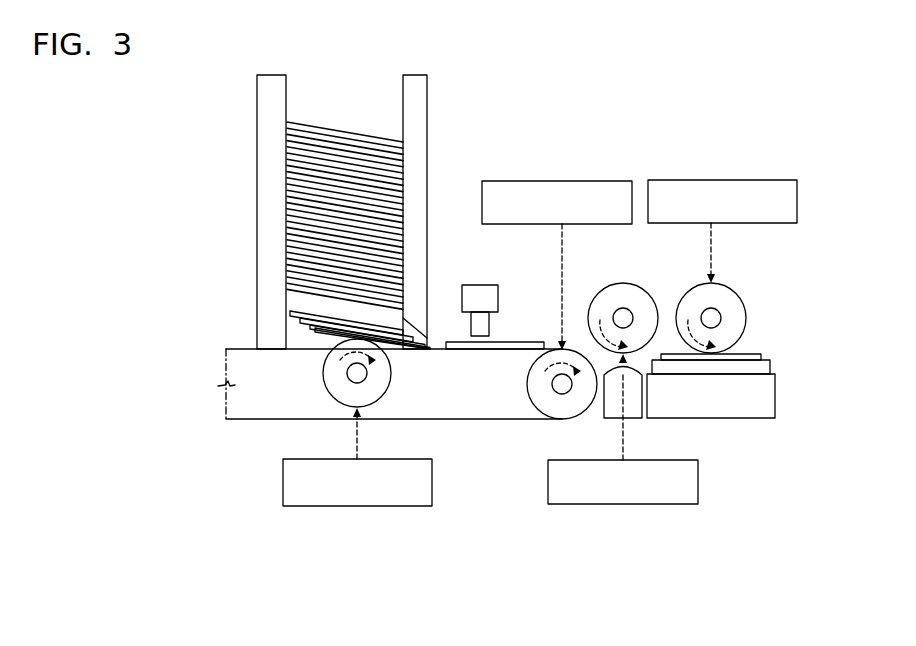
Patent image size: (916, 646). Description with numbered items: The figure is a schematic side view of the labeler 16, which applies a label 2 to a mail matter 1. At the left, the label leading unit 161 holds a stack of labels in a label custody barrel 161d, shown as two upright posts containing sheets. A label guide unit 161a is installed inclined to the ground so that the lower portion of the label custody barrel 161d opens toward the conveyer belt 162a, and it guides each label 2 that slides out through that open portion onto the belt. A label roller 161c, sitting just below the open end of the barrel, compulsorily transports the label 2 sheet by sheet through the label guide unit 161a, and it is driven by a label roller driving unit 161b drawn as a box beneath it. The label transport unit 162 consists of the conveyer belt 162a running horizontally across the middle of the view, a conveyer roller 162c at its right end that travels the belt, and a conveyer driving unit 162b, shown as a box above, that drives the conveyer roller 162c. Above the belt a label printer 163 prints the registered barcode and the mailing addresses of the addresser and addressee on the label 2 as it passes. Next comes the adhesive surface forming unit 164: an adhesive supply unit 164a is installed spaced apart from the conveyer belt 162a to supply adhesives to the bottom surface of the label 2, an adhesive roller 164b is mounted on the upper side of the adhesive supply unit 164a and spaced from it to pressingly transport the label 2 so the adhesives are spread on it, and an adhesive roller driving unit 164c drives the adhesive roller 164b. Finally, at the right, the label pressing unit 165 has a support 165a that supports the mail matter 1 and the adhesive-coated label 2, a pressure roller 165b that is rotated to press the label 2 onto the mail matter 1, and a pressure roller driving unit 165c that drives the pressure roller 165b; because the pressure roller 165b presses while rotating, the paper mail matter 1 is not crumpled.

The labeler 16 is at (893, 98).
The mail matter 1 is at (767, 368).
The label 2 is at (540, 342).
The label leading unit 161 is at (186, 438).
The label guide unit 161a is at (318, 334).
The label roller driving unit 161b is at (330, 506).
The label roller 161c is at (342, 390).
The label custody barrel 161d is at (265, 101).
The label transport unit 162 is at (560, 580).
The conveyer belt 162a is at (437, 350).
The conveyer driving unit 162b is at (525, 224).
The conveyer roller 162c is at (538, 392).
The label printer 163 is at (480, 285).
The adhesive surface forming unit 164 is at (784, 425).
The adhesive supply unit 164a is at (627, 412).
The adhesive roller 164b is at (635, 348).
The adhesive roller driving unit 164c is at (700, 473).
The label pressing unit 165 is at (828, 283).
The support 165a is at (742, 380).
The pressure roller 165b is at (746, 312).
The pressure roller driving unit 165c is at (763, 223).